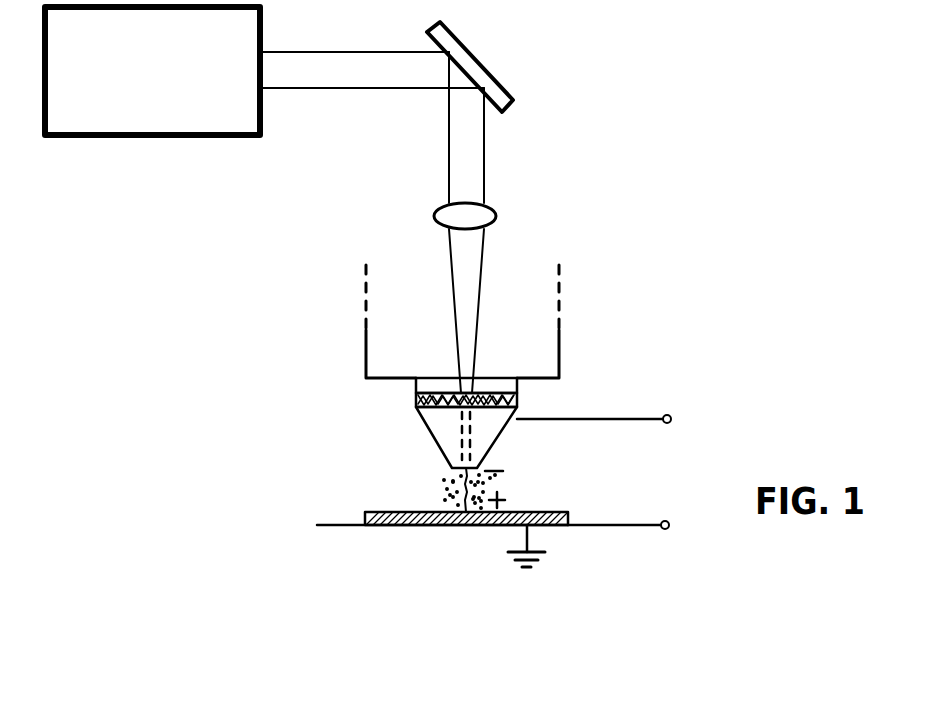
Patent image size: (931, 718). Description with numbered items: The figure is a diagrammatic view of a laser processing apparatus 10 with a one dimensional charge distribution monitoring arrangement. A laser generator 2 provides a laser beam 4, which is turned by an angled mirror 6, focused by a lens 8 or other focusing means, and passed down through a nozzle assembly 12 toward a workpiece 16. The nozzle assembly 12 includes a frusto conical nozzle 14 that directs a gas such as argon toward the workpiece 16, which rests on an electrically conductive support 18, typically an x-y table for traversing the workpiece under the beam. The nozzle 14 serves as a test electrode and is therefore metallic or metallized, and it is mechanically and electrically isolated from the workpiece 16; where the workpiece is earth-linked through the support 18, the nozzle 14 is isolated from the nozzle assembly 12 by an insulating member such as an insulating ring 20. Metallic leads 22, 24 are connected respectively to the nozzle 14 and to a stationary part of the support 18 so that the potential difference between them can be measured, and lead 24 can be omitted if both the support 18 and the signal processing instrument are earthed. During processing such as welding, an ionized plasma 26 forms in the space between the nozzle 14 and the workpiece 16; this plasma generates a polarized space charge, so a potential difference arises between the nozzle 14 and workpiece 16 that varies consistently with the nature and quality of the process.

The laser generator 2 is at (160, 128).
The laser beam 4 is at (361, 81).
The angled mirror 6 is at (502, 82).
The lens 8 is at (497, 213).
The laser processing apparatus 10 is at (328, 426).
The nozzle assembly 12 is at (372, 350).
The frusto conical nozzle 14 is at (503, 437).
The workpiece 16 is at (547, 512).
The electrically conductive support 18 is at (332, 527).
The insulating ring 20 is at (520, 400).
The metallic lead 22 is at (640, 419).
The metallic lead 24 is at (637, 527).
The ionized plasma 26 is at (443, 488).